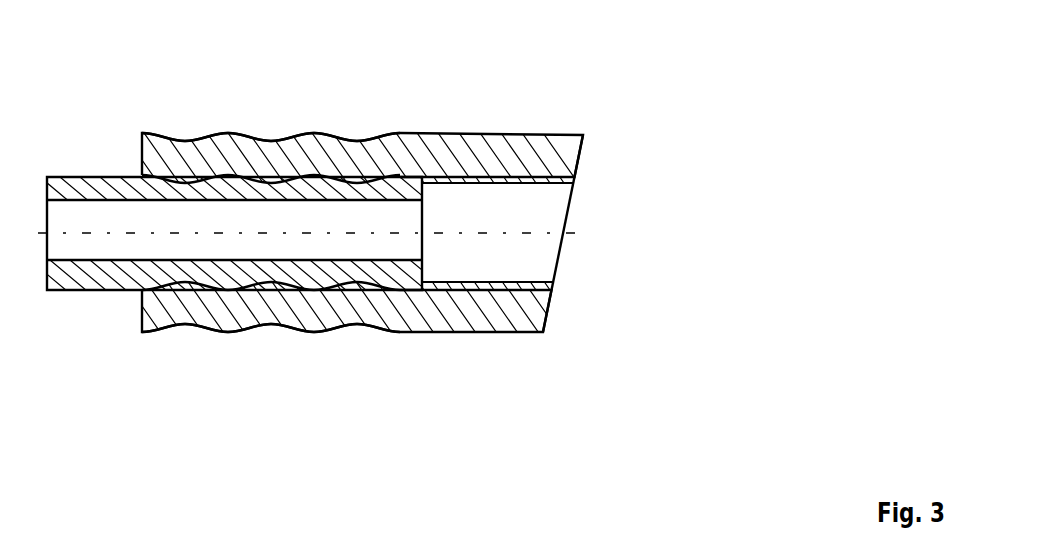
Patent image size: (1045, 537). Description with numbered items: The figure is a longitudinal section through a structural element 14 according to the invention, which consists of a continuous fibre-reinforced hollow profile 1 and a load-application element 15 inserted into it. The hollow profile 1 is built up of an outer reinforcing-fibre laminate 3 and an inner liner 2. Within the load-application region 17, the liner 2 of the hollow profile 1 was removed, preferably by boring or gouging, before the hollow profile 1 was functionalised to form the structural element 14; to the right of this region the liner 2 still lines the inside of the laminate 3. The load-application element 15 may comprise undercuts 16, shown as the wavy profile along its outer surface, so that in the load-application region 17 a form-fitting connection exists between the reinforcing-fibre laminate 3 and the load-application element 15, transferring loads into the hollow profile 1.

The continuous fibre-reinforced hollow profile 1 is at (497, 133).
The liner 2 is at (547, 180).
The reinforcing-fibre laminate 3 is at (548, 158).
The structural element 14 is at (146, 120).
The load-application element 15 is at (73, 290).
The undercuts 16 is at (365, 182).
The load-application region 17 is at (265, 182).